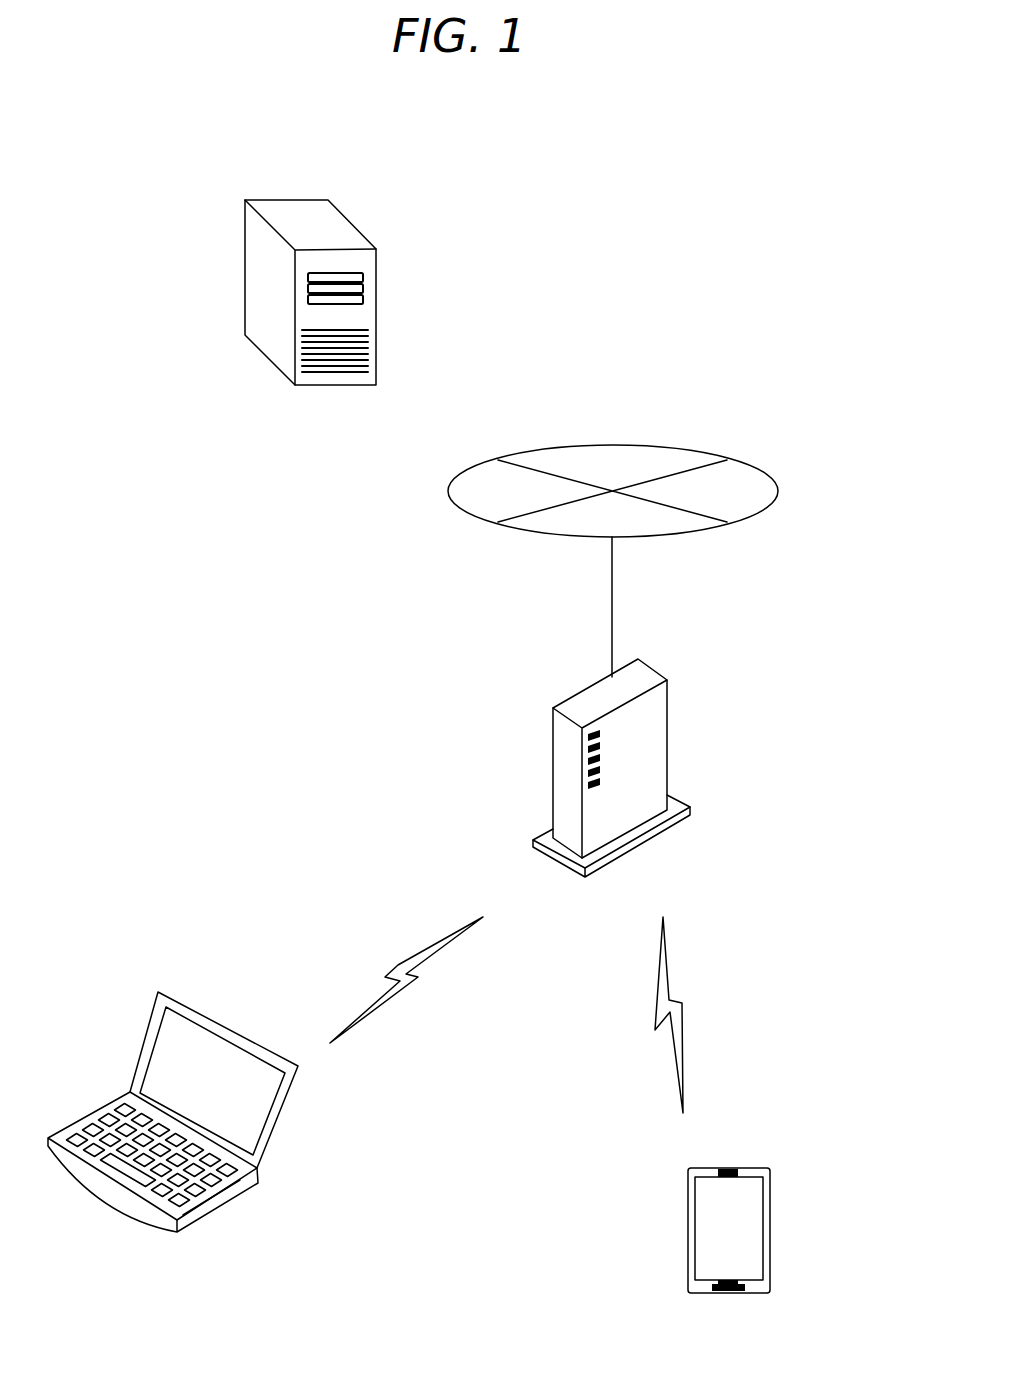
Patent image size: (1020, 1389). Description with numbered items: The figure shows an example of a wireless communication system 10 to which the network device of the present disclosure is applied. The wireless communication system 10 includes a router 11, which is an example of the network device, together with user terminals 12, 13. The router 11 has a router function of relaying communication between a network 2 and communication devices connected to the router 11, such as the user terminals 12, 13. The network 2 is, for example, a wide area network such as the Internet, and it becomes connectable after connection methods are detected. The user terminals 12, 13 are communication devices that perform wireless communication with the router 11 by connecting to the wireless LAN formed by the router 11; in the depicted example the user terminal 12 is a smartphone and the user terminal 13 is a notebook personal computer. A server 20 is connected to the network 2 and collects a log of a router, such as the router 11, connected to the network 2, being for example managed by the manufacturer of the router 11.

The wireless communication system 10 is at (852, 353).
The server 20 is at (300, 200).
The network 2 is at (662, 445).
The router 11 is at (653, 670).
The user terminal 12 is at (747, 1168).
The user terminal 13 is at (188, 1000).